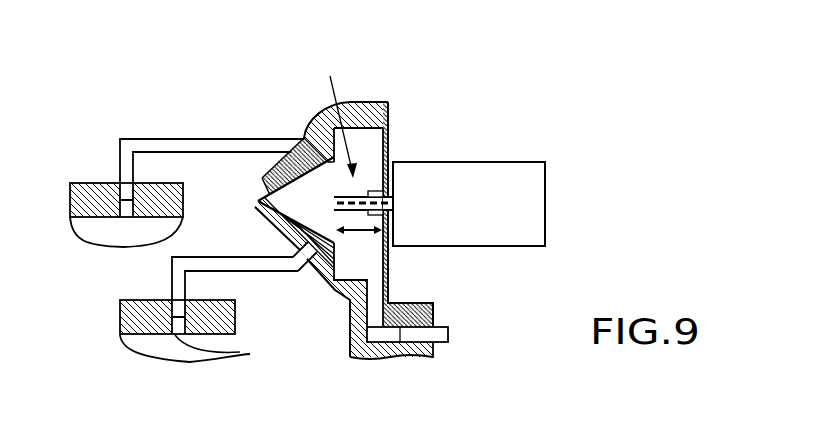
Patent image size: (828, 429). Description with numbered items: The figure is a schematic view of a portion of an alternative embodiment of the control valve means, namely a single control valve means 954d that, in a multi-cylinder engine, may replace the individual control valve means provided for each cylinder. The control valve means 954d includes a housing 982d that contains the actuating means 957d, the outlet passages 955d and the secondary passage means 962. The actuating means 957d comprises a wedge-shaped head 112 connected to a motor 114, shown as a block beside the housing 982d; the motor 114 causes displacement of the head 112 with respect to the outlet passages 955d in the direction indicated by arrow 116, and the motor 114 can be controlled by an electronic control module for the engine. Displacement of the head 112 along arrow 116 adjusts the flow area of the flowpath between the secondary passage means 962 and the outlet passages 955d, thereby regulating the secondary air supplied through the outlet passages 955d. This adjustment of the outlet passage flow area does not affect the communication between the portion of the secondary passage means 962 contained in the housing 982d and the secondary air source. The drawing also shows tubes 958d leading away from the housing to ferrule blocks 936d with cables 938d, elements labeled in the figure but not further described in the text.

The control valve means 954d is at (360, 90).
The secondary passage means 962 is at (372, 172).
The housing 982d is at (383, 124).
The outlet passages 955d is at (285, 152).
The fiber optic tube 958d is at (273, 139).
The ferrule block 936d is at (92, 228).
The fiber optic cable 938d is at (127, 218).
The wedge-shaped head 112 is at (300, 190).
The actuating means 957d is at (323, 115).
The motor 114 is at (455, 162).
The arrow 116 is at (360, 236).